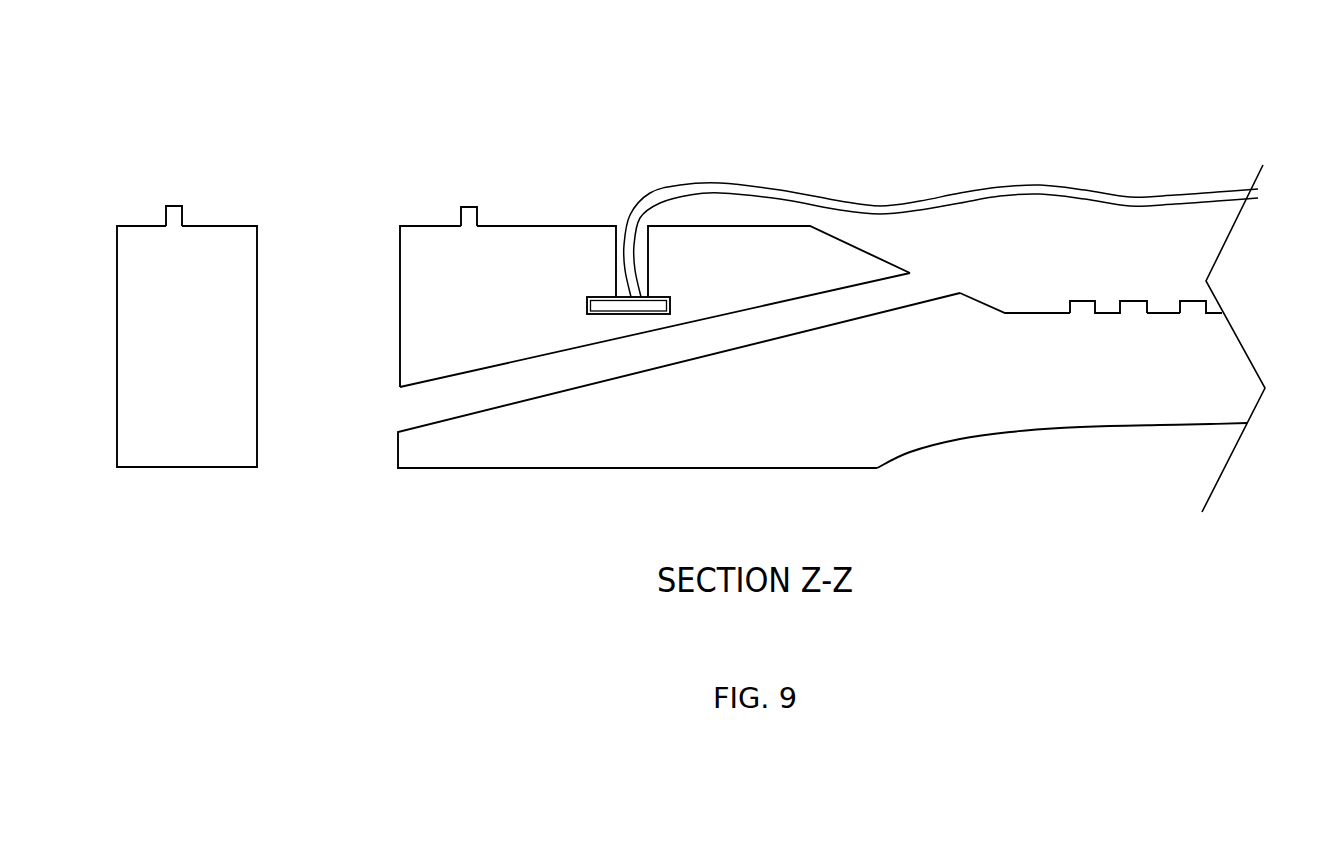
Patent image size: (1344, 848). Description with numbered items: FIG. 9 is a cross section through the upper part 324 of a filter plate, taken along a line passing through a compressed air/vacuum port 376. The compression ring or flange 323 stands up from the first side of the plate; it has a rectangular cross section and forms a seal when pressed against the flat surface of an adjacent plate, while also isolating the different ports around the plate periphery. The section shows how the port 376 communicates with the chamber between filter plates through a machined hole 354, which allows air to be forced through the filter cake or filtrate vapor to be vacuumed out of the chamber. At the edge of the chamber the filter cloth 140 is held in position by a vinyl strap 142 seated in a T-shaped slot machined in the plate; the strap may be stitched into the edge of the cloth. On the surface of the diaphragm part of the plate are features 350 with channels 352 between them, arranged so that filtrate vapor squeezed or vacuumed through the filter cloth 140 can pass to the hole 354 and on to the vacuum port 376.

The upper part 324 is at (196, 449).
The compression ring/flange 323 is at (176, 213).
The machined hole 354 is at (523, 380).
The compressed air/vacuum port 376 is at (320, 408).
The vinyl strap 142 is at (605, 303).
The filter cloth 140 is at (942, 205).
The features 350 is at (1137, 306).
The channels 352 is at (1164, 305).